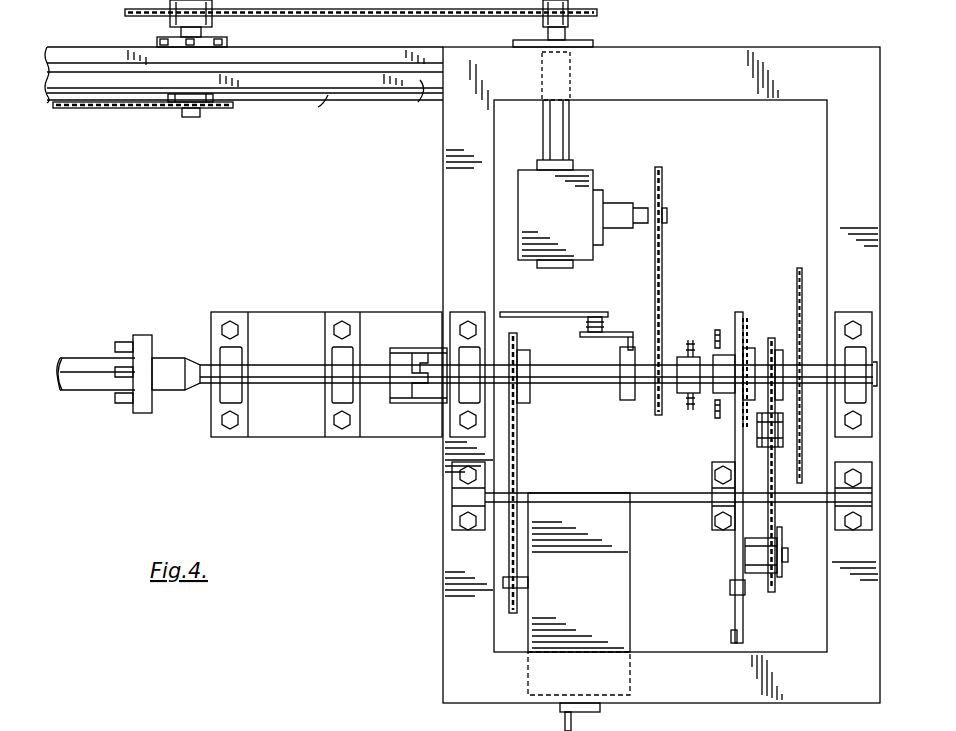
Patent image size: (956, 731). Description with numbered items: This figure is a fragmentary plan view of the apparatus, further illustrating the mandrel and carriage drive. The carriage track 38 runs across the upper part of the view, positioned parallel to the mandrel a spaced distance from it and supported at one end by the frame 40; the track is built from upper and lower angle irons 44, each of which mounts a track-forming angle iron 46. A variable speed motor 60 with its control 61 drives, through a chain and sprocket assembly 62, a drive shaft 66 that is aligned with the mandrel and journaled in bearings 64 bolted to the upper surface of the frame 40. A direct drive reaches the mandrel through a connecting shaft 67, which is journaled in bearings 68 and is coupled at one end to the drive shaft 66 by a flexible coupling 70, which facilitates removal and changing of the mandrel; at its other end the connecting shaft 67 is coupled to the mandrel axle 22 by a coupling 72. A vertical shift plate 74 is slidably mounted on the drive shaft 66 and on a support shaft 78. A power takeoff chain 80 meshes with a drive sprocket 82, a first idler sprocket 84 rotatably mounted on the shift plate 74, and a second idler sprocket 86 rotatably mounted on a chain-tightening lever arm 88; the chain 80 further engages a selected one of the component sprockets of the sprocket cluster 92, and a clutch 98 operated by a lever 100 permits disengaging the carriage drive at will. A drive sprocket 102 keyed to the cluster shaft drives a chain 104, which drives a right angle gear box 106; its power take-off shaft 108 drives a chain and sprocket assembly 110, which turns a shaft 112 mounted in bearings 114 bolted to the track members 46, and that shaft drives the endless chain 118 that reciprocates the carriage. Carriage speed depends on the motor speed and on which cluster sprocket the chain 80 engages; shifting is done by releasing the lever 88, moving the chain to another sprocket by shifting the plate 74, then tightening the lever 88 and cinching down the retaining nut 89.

The axle 22 is at (84, 357).
The track 38 is at (240, 155).
The frame 40 is at (443, 600).
The angle iron 44 is at (312, 113).
The track-forming angle iron 46 is at (420, 106).
The variable speed motor 60 is at (632, 576).
The control 61 is at (562, 727).
The chain and sprocket assembly 62 is at (520, 439).
The bearings 64 is at (454, 401).
The drive shaft 66 is at (590, 371).
The connecting shaft 67 is at (282, 371).
The bearings 68 is at (242, 394).
The flexible coupling 70 is at (411, 353).
The coupling 72 is at (142, 328).
The vertical shift plate 74 is at (738, 314).
The support shaft 78 is at (686, 504).
The power takeoff chain 80 is at (769, 588).
The drive sprocket 82 is at (788, 346).
The first idler sprocket 84 is at (760, 432).
The second idler sprocket 86 is at (778, 529).
The chain-tightening lever arm 88 is at (730, 628).
The retaining nut 89 is at (788, 560).
The sprocket cluster 92 is at (748, 262).
The clutch 98 is at (622, 396).
The lever 100 is at (604, 326).
The drive sprocket 102 is at (654, 414).
The chain 104 is at (654, 274).
The right angle gear box 106 is at (574, 171).
The power take-off shaft 108 is at (567, 35).
The chain and sprocket assembly 110 is at (124, 18).
The shaft 112 is at (186, 114).
The bearings 114 is at (216, 36).
The endless chain 118 is at (94, 110).